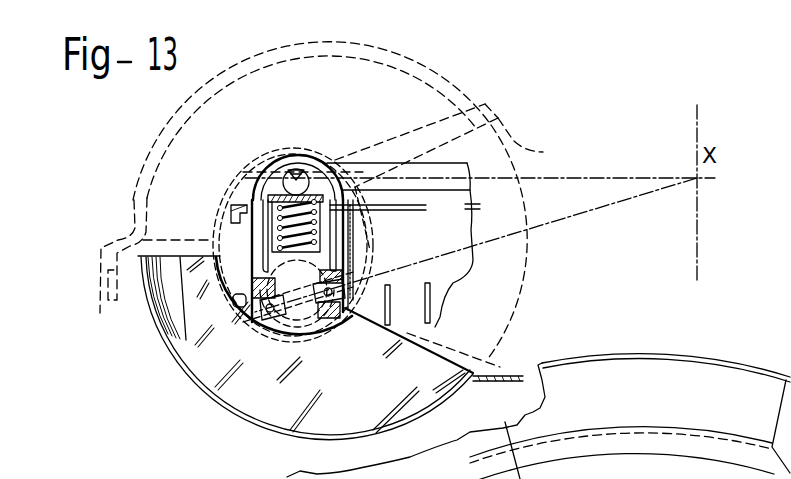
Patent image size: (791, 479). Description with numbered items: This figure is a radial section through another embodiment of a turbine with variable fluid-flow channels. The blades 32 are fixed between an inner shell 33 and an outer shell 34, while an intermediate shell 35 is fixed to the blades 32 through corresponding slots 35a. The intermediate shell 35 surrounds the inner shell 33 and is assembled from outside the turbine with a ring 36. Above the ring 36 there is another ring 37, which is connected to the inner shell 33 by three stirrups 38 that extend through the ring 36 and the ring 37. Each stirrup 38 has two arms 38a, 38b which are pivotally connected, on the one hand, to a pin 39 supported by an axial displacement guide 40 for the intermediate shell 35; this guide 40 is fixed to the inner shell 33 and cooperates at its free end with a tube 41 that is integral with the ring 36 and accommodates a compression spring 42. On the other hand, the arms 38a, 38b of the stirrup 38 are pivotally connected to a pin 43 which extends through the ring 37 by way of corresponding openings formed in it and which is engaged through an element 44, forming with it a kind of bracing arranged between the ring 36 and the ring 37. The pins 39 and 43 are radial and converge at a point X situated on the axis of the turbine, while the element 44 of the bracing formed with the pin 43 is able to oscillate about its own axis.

The blades 32 is at (417, 357).
The inner shell 33 is at (233, 304).
The outer shell 34 is at (201, 393).
The intermediate shell 35 is at (255, 305).
The slots 35a is at (362, 292).
The ring 36 is at (403, 191).
The ring 37 is at (316, 158).
The stirrup 38 is at (262, 255).
The arm 38a is at (247, 241).
The arm 38b is at (340, 240).
The pin 39 is at (380, 283).
The axial displacement guide 40 is at (300, 325).
The tube 41 is at (330, 203).
The compression spring 42 is at (264, 202).
The pin 43 is at (278, 198).
The element 44 is at (299, 169).